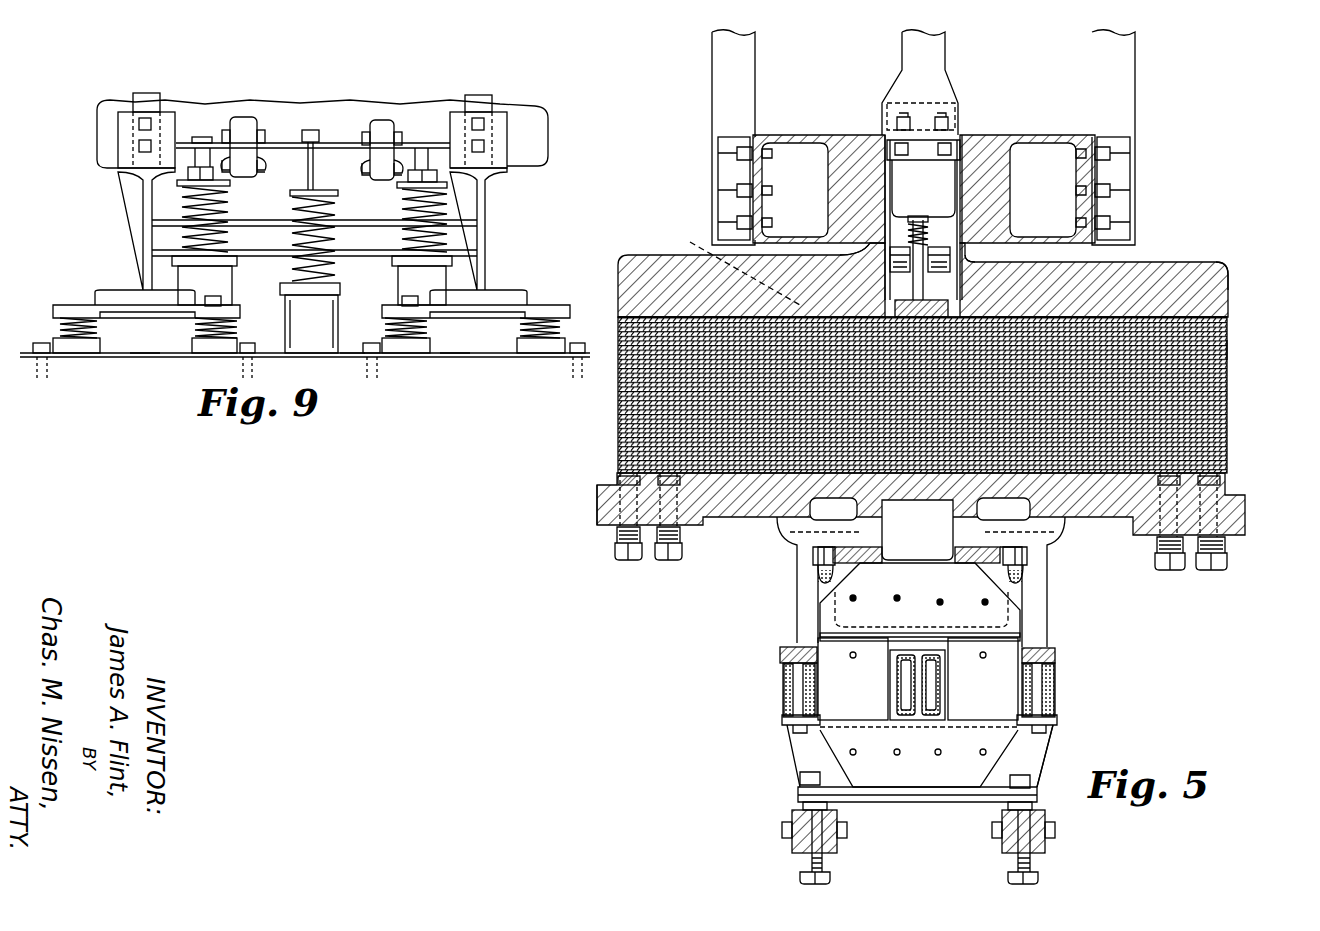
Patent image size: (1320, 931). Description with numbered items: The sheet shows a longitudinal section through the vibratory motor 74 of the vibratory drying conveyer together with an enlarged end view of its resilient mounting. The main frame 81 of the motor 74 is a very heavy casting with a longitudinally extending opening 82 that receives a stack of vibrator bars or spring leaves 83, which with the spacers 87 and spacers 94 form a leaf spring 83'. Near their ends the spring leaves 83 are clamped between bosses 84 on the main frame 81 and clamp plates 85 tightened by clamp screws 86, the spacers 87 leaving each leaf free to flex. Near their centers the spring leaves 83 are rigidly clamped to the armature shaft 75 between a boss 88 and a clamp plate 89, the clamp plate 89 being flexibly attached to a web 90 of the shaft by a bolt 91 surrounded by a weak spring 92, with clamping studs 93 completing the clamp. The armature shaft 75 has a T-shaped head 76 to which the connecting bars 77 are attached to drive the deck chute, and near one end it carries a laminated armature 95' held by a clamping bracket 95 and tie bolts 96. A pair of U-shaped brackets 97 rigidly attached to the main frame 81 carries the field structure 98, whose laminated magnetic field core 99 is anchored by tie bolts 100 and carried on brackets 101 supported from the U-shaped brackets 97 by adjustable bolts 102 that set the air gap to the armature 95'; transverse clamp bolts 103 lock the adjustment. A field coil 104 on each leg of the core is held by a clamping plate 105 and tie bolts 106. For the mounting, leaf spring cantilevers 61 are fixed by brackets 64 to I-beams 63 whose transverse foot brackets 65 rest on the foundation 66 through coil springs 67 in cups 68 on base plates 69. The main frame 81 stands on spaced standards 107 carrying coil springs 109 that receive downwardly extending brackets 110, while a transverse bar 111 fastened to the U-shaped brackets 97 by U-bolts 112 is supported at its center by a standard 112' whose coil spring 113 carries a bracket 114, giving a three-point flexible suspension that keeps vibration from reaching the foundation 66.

In FIG. 9, the leaf spring cantilevers 61 is at (317, 74).
In FIG. 9, the I-beams 63 is at (304, 236).
In FIG. 9, the brackets 64 is at (317, 142).
In FIG. 9, the transverse foot brackets 65 is at (311, 279).
In FIG. 9, the foundation 66 is at (359, 331).
In FIG. 9, the coil springs 67 is at (310, 331).
In FIG. 9, the cups 68 is at (308, 377).
In FIG. 9, the base plates 69 is at (287, 380).
In FIG. 5, the vibratory motor 74 is at (548, 542).
In FIG. 5, the armature shaft 75 is at (884, 346).
In FIG. 5, the T-shaped head 76 is at (924, 195).
In FIG. 5, the connecting bars 77 is at (926, 137).
In FIG. 5, the main frame 81 is at (1235, 254).
In FIG. 5, the longitudinally extending opening 82 is at (1094, 266).
In FIG. 5, the spring leaves 83 is at (915, 395).
In FIG. 5, the leaf spring 83' is at (1265, 344).
In FIG. 5, the bosses 84 is at (934, 280).
In FIG. 5, the clamp plates 85 is at (915, 503).
In FIG. 5, the clamp screws 86 is at (921, 555).
In FIG. 5, the spacers 87 is at (915, 372).
In FIG. 5, the boss 88 is at (911, 526).
In FIG. 5, the clamp plate 89 is at (989, 264).
In FIG. 5, the web 90 is at (854, 254).
In FIG. 5, the bolt 91 is at (924, 251).
In FIG. 5, the weak spring 92 is at (917, 204).
In FIG. 5, the clamping studs 93 is at (923, 229).
In FIG. 5, the spacers 94 is at (729, 267).
In FIG. 5, the clamping bracket 95 is at (961, 594).
In FIG. 5, the armature 95' is at (921, 599).
In FIG. 5, the tie bolts 96 is at (919, 615).
In FIG. 9, the U-shaped brackets 97 is at (324, 108).
In FIG. 5, the U-shaped brackets 97 is at (916, 697).
In FIG. 5, the field structure 98 is at (1088, 735).
In FIG. 5, the magnetic field core 99 is at (983, 679).
In FIG. 5, the tie bolts 100 is at (918, 769).
In FIG. 5, the brackets 101 is at (887, 758).
In FIG. 5, the adjustable bolts 102 is at (919, 867).
In FIG. 5, the clamp bolts 103 is at (918, 822).
In FIG. 5, the field coils 104 is at (923, 688).
In FIG. 5, the clamping plate 105 is at (960, 647).
In FIG. 5, the tie bolts 106 is at (883, 685).
In FIG. 9, the standards 107 is at (312, 281).
In FIG. 9, the coil springs 109 is at (314, 214).
In FIG. 9, the brackets 110 is at (319, 121).
In FIG. 9, the transverse bar 111 is at (313, 102).
In FIG. 9, the U-bolts 112 is at (312, 172).
In FIG. 9, the standard 112' is at (289, 318).
In FIG. 9, the coil spring 113 is at (286, 239).
In FIG. 9, the bracket 114 is at (341, 135).